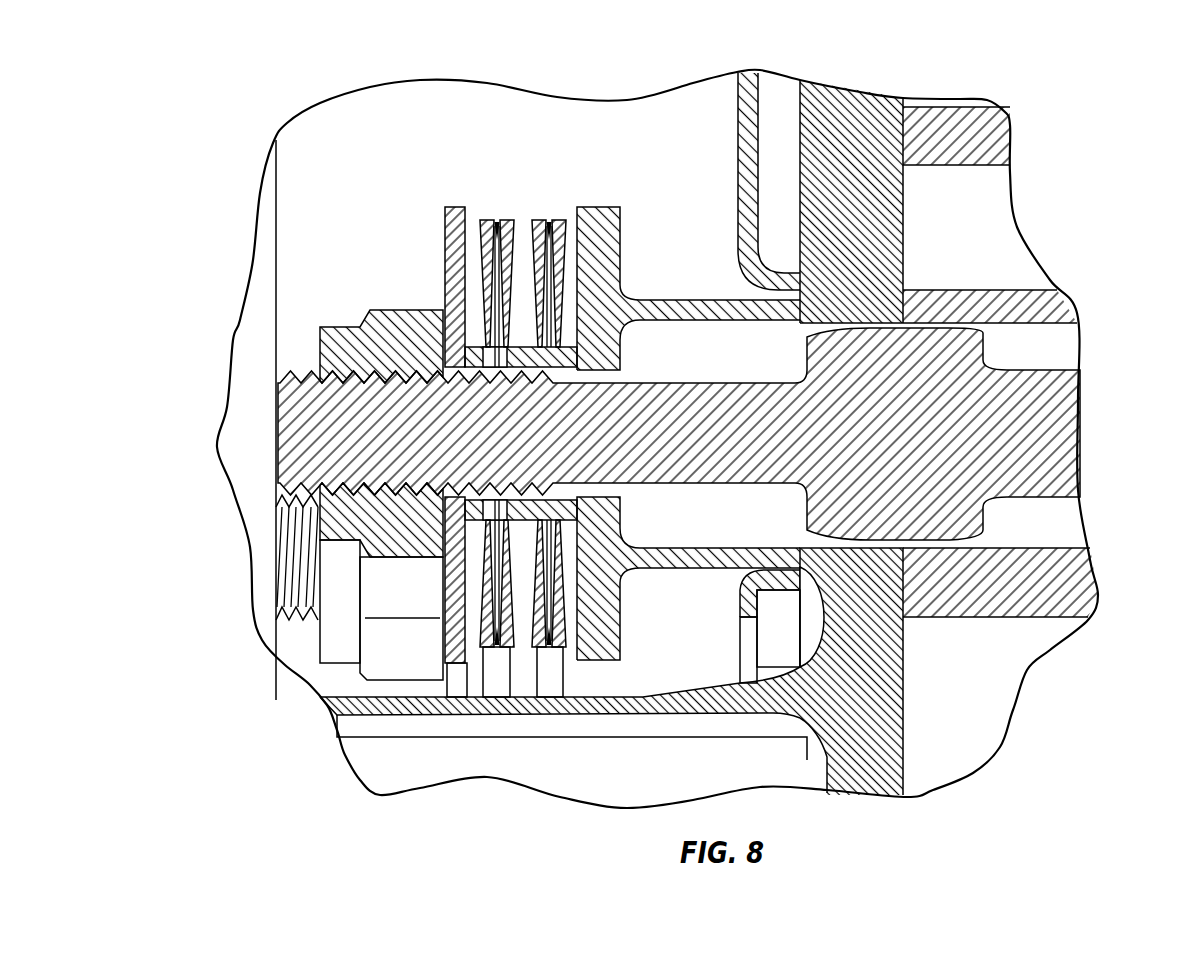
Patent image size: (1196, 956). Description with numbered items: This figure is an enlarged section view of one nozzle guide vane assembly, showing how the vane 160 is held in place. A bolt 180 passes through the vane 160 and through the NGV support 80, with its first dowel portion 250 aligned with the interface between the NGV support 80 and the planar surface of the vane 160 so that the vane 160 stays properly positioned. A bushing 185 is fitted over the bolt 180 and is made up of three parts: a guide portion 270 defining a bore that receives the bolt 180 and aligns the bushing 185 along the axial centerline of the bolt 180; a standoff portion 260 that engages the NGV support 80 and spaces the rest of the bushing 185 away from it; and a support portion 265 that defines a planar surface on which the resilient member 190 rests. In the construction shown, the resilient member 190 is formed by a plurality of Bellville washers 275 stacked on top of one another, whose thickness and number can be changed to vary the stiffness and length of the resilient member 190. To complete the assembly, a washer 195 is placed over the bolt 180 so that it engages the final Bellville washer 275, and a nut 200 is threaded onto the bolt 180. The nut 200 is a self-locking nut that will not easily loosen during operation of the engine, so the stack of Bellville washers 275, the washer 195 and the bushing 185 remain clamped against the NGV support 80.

The NGV support 80 is at (880, 108).
The vane 160 is at (1075, 310).
The bolt 180 is at (1067, 467).
The bushing 185 is at (670, 300).
The resilient member 190 is at (495, 687).
The washer 195 is at (443, 277).
The nut 200 is at (333, 657).
The first dowel portion 250 is at (927, 325).
The standoff portion 260 is at (723, 560).
The support portion 265 is at (612, 257).
The guide portion 270 is at (562, 503).
The Bellville washers 275 is at (492, 222).